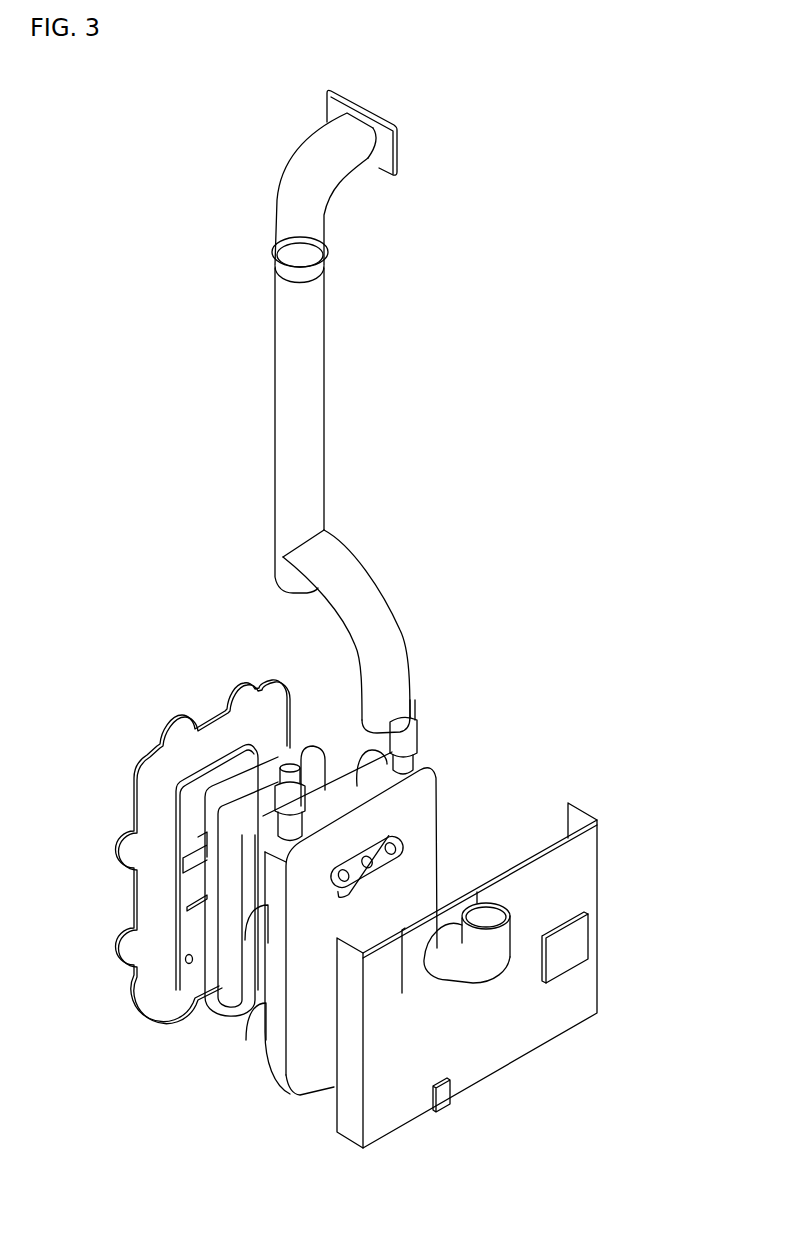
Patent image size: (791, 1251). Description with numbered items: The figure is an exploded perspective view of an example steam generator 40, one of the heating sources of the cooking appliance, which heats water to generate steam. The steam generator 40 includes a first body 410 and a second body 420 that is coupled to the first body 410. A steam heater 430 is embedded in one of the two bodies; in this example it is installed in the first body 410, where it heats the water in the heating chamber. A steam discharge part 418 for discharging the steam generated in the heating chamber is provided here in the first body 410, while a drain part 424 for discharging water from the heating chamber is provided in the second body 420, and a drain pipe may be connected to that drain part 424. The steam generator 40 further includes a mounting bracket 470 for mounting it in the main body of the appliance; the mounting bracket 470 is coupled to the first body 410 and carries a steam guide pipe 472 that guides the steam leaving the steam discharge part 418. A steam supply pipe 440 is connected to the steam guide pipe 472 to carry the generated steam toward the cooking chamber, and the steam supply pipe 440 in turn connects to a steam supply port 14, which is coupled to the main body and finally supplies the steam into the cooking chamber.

The steam generator 40 is at (118, 698).
The steam supply port 14 is at (302, 165).
The steam supply pipe 440 is at (332, 547).
The steam heater 430 is at (416, 735).
The first body 410 is at (307, 1077).
The steam discharge part 418 is at (397, 842).
The second body 420 is at (160, 987).
The drain part 424 is at (183, 957).
The mounting bracket 470 is at (488, 1057).
The steam guide pipe 472 is at (500, 938).